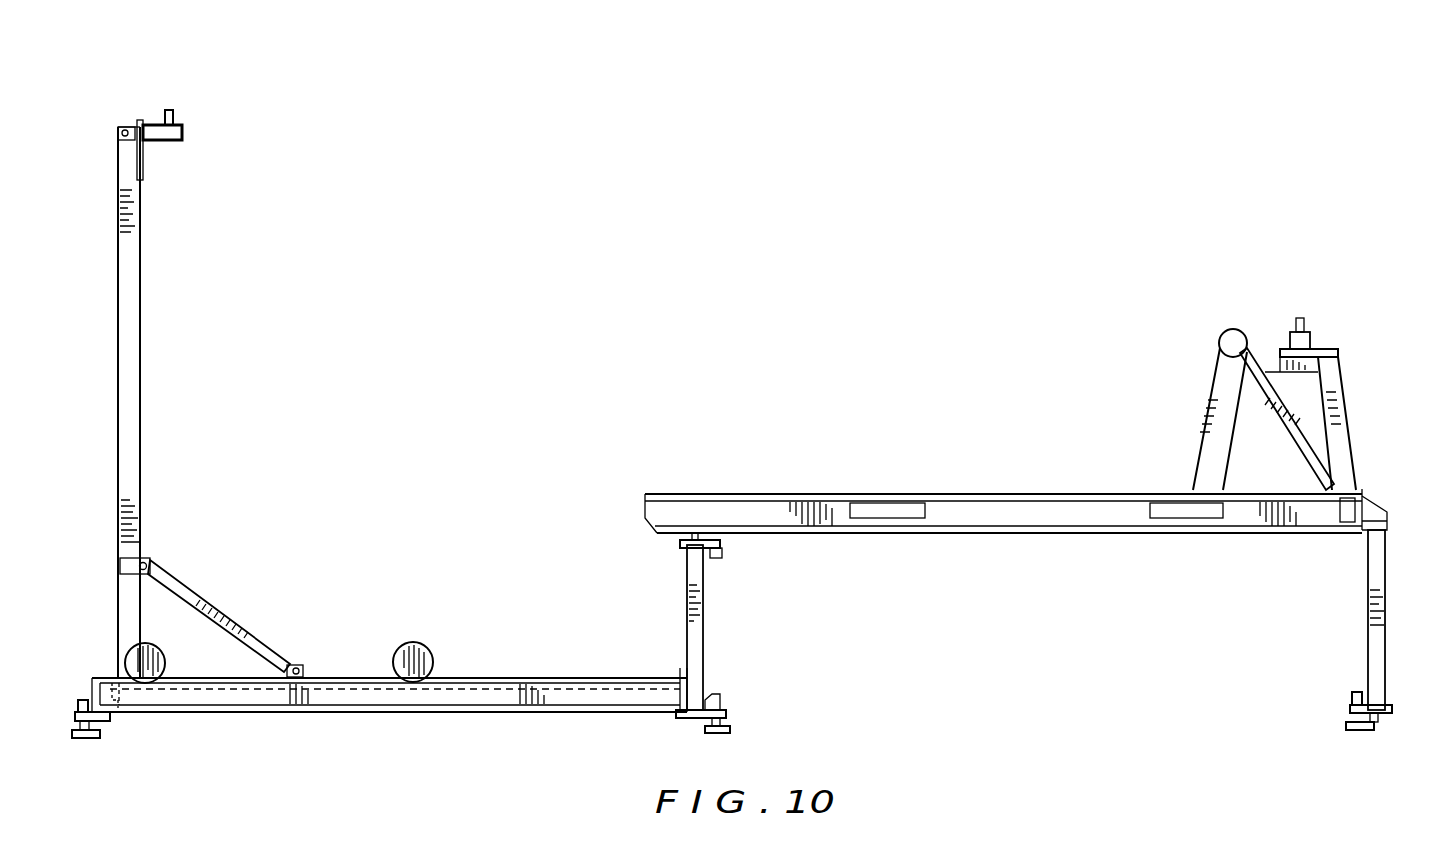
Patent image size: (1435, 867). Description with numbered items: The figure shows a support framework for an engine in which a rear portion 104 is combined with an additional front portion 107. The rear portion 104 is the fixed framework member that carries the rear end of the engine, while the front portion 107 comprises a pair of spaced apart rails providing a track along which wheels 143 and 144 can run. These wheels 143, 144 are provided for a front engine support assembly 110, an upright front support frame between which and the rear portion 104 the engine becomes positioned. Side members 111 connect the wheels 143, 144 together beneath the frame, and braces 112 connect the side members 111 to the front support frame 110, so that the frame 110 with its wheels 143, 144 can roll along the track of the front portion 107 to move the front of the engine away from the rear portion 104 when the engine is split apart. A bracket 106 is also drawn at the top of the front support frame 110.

The rear portion 104 is at (966, 480).
The upper bracket 106 is at (156, 122).
The front portion 107 is at (482, 712).
The front engine support assembly 110 is at (142, 278).
The side members 111 is at (222, 695).
The braces 112 is at (227, 608).
The wheels 143 is at (430, 658).
The wheels 144 is at (130, 658).